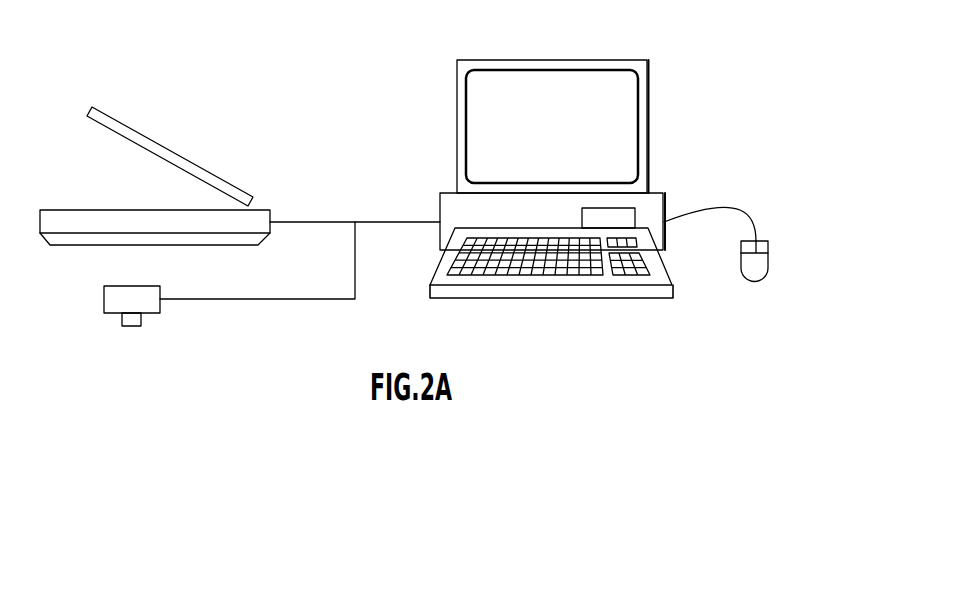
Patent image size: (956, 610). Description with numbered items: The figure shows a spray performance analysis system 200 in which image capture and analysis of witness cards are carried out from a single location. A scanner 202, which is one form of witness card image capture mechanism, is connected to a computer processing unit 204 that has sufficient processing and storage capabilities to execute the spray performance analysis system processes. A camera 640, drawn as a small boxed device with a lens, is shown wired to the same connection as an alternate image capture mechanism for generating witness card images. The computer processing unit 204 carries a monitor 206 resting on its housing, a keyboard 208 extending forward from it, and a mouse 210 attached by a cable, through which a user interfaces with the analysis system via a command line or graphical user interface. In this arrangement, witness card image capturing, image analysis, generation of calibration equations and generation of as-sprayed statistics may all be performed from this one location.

The image capture and processing system 200 is at (308, 90).
The scanner 202 is at (172, 152).
The computer processing unit 204 is at (440, 210).
The monitor 206 is at (567, 60).
The keyboard 208 is at (600, 299).
The mouse 210 is at (752, 283).
The camera 640 is at (148, 313).